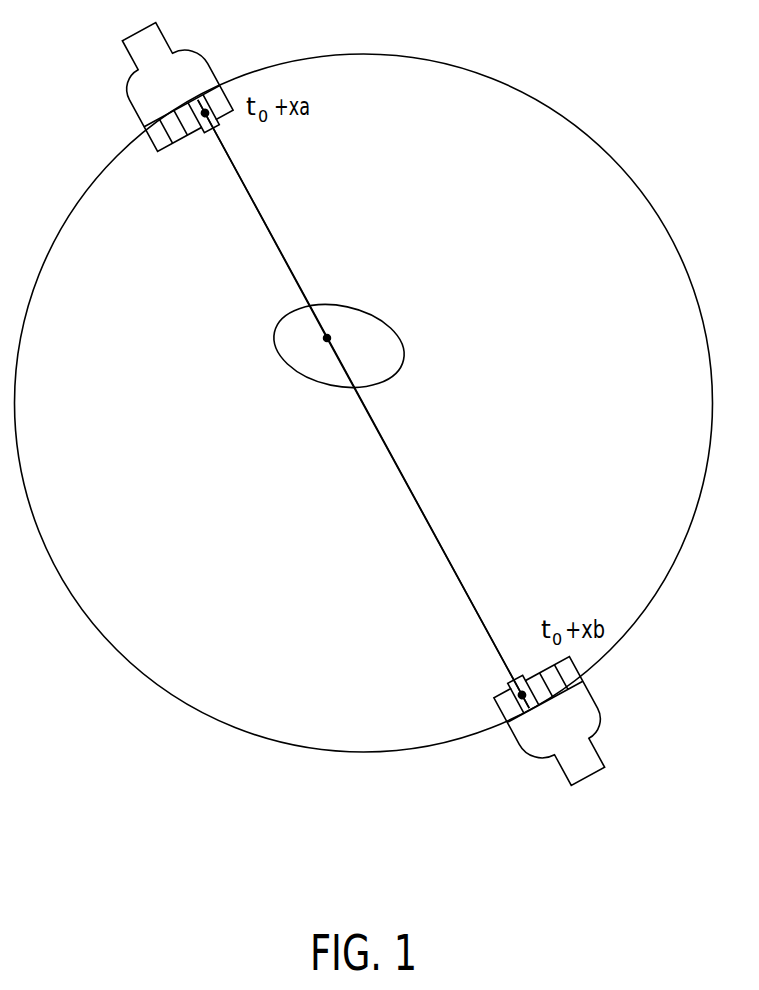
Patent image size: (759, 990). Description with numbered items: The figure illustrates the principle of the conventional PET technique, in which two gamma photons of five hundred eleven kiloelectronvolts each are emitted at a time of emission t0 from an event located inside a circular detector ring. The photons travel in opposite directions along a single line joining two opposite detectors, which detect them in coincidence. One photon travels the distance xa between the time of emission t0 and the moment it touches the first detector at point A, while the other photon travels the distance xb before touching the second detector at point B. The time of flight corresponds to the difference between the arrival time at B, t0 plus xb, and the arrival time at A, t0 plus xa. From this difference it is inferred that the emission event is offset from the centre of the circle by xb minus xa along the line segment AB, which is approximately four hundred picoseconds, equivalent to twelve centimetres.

The detector point A is at (169, 83).
The detector point B is at (559, 724).
The time of emission t0 is at (342, 346).
The distance Xa xa is at (262, 219).
The distance Xb xb is at (428, 523).